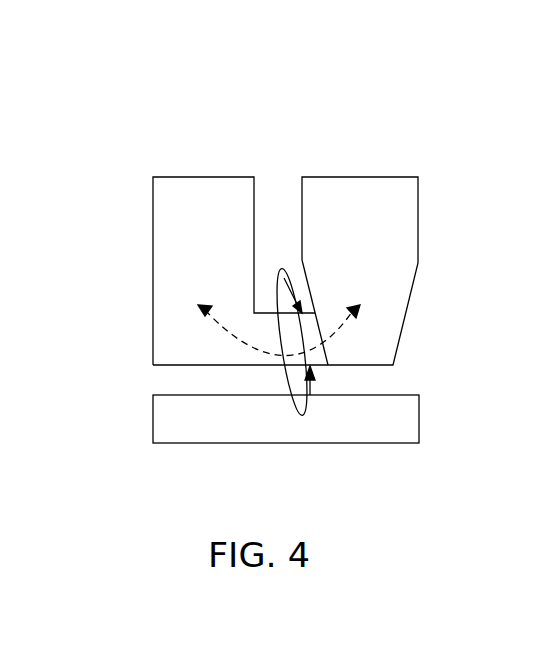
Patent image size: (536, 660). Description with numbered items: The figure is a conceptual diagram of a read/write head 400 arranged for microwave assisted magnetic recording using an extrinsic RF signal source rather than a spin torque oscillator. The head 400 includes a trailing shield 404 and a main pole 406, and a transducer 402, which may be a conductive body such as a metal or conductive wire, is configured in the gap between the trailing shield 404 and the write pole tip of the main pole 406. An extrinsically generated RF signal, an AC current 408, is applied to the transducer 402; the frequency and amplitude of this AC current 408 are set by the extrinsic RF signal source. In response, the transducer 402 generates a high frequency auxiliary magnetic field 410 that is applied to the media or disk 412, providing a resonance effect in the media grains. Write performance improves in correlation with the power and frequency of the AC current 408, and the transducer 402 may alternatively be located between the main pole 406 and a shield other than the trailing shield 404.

The head 400 is at (262, 82).
The transducer 402 is at (318, 369).
The trailing shield 404 is at (177, 197).
The main pole 406 is at (385, 187).
The extrinsically generated RF signal (AC current) 408 is at (236, 322).
The magnetic field 410 is at (312, 403).
The media 412 is at (160, 420).